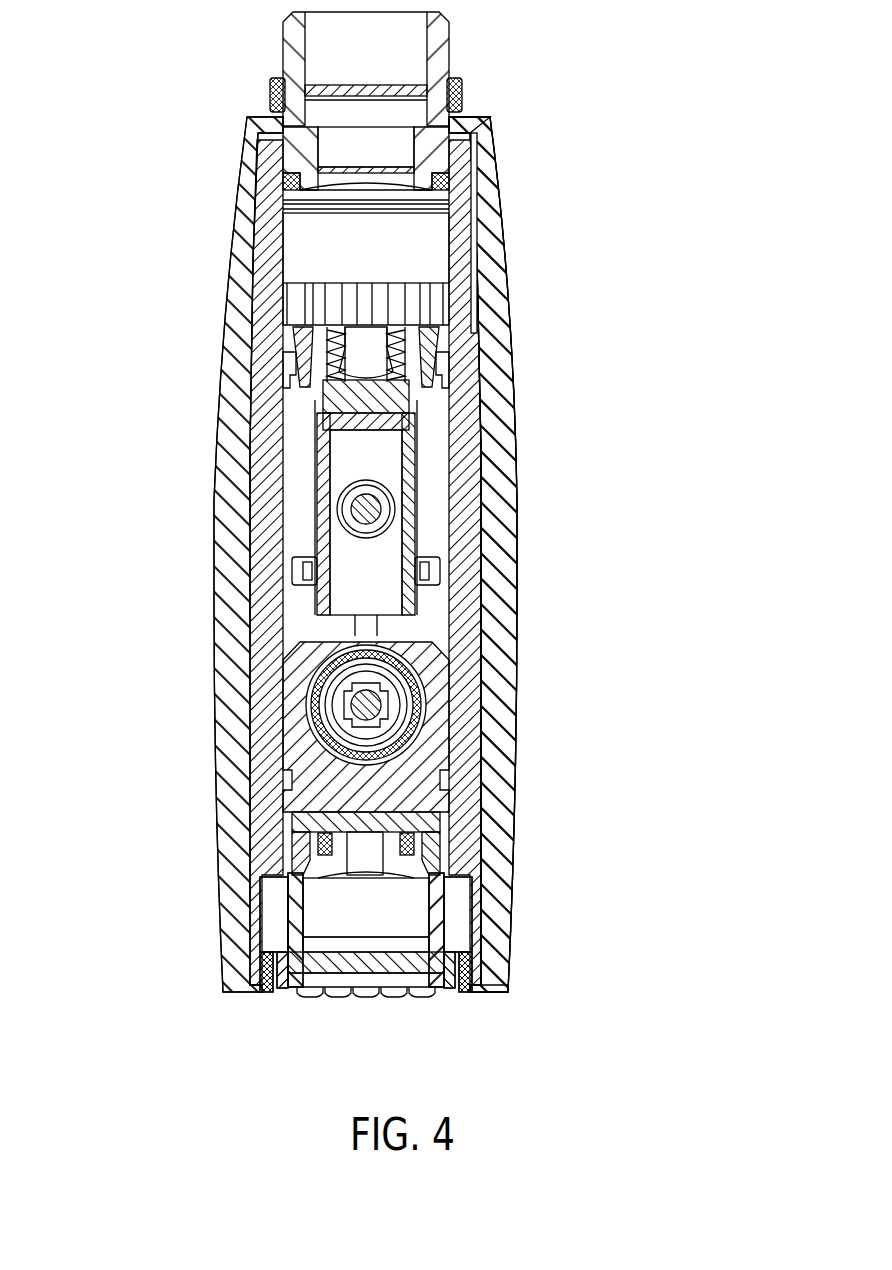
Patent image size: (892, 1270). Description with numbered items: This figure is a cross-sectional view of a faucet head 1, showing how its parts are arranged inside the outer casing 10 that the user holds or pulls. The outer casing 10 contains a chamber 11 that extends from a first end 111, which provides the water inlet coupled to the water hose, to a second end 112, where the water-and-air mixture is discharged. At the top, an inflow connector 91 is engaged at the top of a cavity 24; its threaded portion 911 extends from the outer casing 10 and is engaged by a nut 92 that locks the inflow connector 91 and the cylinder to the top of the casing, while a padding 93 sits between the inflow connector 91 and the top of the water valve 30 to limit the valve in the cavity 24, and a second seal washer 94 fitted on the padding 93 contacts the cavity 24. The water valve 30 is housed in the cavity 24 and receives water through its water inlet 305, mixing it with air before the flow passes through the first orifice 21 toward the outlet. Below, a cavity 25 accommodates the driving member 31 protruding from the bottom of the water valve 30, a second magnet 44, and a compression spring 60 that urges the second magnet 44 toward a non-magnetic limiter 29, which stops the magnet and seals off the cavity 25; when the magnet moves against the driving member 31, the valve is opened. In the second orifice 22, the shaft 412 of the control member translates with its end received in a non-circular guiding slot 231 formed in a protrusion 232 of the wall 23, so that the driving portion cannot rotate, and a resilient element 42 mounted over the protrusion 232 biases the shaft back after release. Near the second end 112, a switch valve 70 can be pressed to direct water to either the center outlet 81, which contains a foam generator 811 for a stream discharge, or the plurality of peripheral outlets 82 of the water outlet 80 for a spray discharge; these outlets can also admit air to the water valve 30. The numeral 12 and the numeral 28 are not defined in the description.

The faucet head 1 is at (583, 165).
The outer casing 10 is at (237, 153).
The chamber 11 is at (476, 318).
The outer shell 12 is at (493, 287).
The first end 111 is at (484, 117).
The second end 112 is at (497, 985).
The first orifice 21 is at (436, 413).
The second orifice 22 is at (343, 590).
The wall 23 is at (350, 453).
The cavity 24 is at (290, 227).
The cavity 25 is at (290, 338).
The bottom plate 28 is at (440, 836).
The limiter 29 is at (437, 447).
The water valve 30 is at (449, 246).
The driving member 31 is at (420, 400).
The water inlet 305 is at (317, 190).
The resilient element 42 is at (343, 495).
The second magnet 44 is at (300, 393).
The shaft 412 is at (383, 515).
The guiding slot 231 is at (384, 512).
The protrusion 232 is at (378, 535).
The compression spring 60 is at (408, 354).
The switch valve 70 is at (420, 695).
The water outlet 80 is at (272, 997).
The center outlet 81 is at (402, 998).
The foam generator 811 is at (414, 913).
The peripheral outlets 82 is at (273, 968).
The inflow connector 91 is at (283, 50).
The threaded portion 911 is at (448, 50).
The nut 92 is at (462, 100).
The padding 93 is at (452, 196).
The second seal washer 94 is at (450, 160).